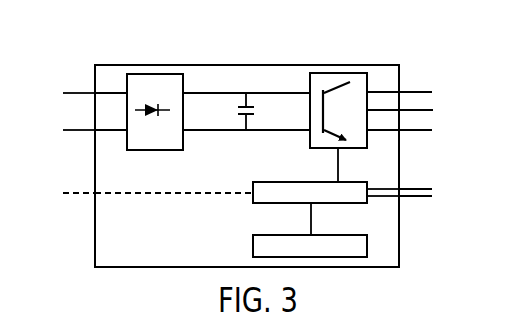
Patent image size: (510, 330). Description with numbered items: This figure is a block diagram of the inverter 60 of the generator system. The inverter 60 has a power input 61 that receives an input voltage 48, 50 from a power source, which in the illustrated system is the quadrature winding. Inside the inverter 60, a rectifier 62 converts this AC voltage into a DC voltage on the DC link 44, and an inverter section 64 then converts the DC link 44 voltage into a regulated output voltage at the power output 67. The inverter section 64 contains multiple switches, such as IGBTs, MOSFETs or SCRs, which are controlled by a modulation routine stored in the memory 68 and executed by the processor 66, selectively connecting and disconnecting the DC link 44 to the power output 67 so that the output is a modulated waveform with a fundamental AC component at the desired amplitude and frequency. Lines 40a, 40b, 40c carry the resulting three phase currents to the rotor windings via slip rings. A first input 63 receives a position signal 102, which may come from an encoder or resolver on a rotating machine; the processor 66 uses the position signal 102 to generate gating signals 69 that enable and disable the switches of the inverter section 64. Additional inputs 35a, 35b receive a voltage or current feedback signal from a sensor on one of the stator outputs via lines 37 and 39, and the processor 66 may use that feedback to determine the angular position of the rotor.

The inverter 60 is at (246, 65).
The power input 61 is at (101, 86).
The rectifier 62 is at (153, 74).
The DC link 44 is at (223, 89).
The inverter section 64 is at (339, 73).
The input voltage 48 is at (79, 92).
The input voltage 50 is at (79, 131).
The line 40a is at (419, 92).
The line 40b is at (425, 110).
The line 40c is at (419, 130).
The processor 66 is at (253, 183).
The memory 68 is at (253, 245).
The gating signals 69 is at (338, 171).
The power output 67 is at (391, 139).
The additional input 35a is at (402, 189).
The additional input 35b is at (402, 197).
The line 37 is at (421, 188).
The line 39 is at (421, 197).
The first input 63 is at (96, 196).
The position signal 102 is at (77, 191).